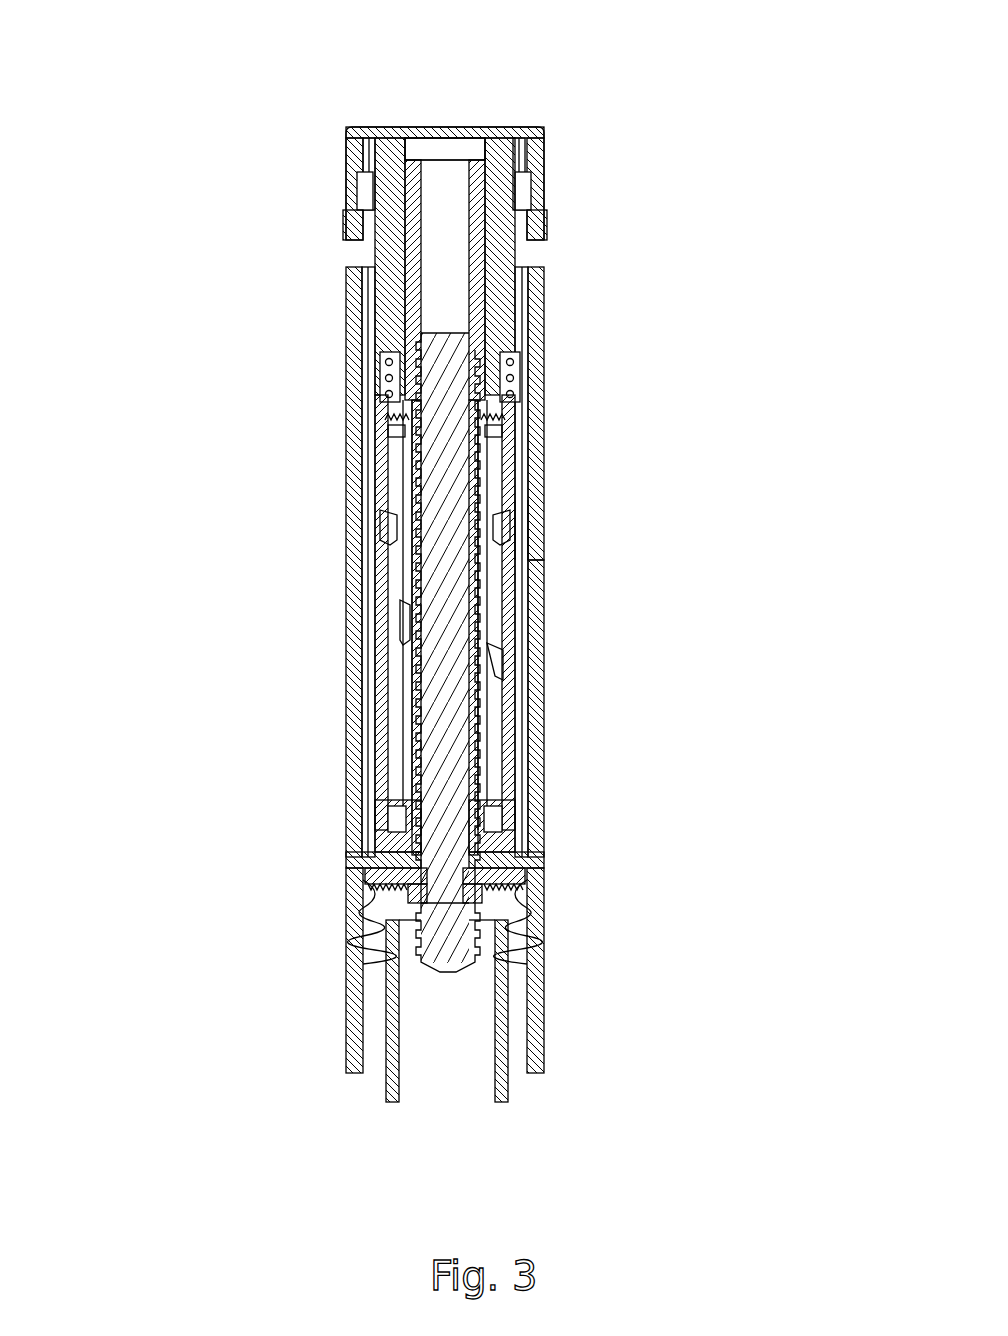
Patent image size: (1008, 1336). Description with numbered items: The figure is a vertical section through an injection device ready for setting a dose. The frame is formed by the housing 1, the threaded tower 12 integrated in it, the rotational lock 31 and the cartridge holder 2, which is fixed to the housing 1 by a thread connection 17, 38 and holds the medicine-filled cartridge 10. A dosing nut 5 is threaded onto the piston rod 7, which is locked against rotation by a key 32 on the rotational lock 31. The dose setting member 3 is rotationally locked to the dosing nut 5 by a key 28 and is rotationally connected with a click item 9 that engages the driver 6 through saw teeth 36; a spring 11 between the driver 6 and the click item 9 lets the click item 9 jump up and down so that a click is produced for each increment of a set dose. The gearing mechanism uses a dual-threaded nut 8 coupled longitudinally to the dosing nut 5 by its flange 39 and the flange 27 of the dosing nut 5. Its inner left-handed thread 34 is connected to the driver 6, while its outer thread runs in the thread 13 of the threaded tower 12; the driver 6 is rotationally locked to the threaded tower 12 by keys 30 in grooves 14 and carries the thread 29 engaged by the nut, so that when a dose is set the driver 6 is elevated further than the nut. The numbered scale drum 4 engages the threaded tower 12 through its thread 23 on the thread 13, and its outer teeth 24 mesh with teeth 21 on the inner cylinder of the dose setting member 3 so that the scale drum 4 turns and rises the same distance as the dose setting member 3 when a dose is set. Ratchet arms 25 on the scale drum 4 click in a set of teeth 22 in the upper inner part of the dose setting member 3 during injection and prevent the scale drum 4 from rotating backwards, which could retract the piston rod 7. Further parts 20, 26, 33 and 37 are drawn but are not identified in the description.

The housing 1 is at (552, 445).
The cartridge holder 2 is at (537, 1105).
The dose setting member 3 is at (343, 107).
The scale drum 4 is at (537, 616).
The dosing nut 5 is at (484, 765).
The driver 6 is at (536, 559).
The piston rod 7 is at (464, 804).
The dual-threaded nut 8 is at (500, 484).
The click item 9 is at (374, 384).
The cartridge 10 is at (385, 1085).
The spring 11 is at (374, 403).
The threaded tower 12 is at (400, 726).
The thread 13 is at (401, 652).
The grooves 14 is at (402, 612).
The thread connection 17 is at (375, 910).
The piston sleeve 20 is at (352, 338).
The teeth 21 is at (542, 238).
The teeth 22 is at (540, 140).
The thread connection 23 is at (415, 840).
The teeth 24 is at (542, 218).
The ratchet arms 25 is at (352, 175).
The bottom plate 26 is at (535, 885).
The flange 27 is at (393, 432).
The key 28 is at (505, 137).
The thread 29 is at (508, 678).
The keys 30 is at (418, 808).
The rotational lock 31 is at (537, 877).
The key 32 is at (528, 898).
The seal 33 is at (402, 893).
The inner thread 34 is at (530, 526).
The saw teeth 36 is at (540, 406).
The guide strip 37 is at (352, 372).
The thread connection 38 is at (370, 950).
The flange 39 is at (383, 425).